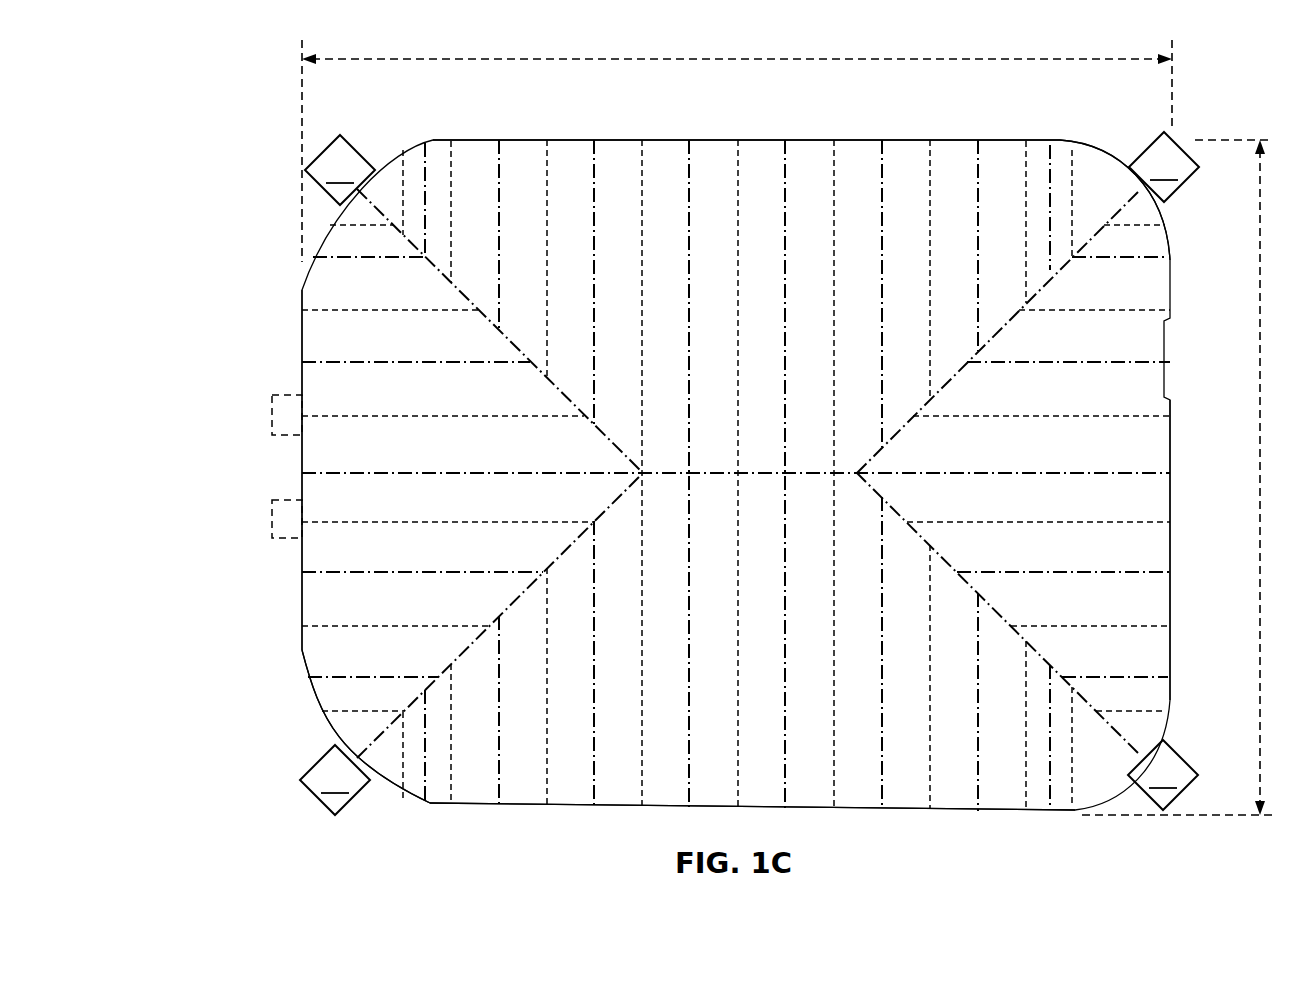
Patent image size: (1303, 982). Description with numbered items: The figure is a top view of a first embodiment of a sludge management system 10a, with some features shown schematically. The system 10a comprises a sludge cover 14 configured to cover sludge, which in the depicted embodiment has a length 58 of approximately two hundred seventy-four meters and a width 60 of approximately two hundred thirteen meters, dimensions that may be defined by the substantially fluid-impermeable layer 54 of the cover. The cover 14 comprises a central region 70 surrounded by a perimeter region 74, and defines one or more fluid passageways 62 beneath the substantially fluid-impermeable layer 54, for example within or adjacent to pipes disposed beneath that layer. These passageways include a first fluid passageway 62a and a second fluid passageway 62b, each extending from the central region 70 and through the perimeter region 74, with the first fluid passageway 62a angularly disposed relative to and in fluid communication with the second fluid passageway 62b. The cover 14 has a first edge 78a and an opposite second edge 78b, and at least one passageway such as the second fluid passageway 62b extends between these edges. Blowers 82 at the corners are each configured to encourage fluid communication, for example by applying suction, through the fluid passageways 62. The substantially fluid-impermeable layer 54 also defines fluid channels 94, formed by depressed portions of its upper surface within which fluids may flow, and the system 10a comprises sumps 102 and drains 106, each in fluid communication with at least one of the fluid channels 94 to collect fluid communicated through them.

The sludge management system 10a is at (287, 228).
The sludge cover 14 is at (1178, 232).
The substantially fluid-impermeable layer 54 is at (1002, 157).
The length 58 is at (737, 151).
The width 60 is at (1177, 477).
The fluid passageways 62 is at (737, 448).
The first fluid passageway 62a is at (747, 524).
The second fluid passageway 62b is at (688, 467).
The central region 70 is at (753, 545).
The perimeter region 74 is at (614, 790).
The first edge 78a is at (302, 330).
The second edge 78b is at (1172, 592).
The blowers 82 is at (749, 473).
The fluid channels 94 is at (736, 443).
The sumps 102 is at (215, 466).
The drains 106 is at (300, 628).